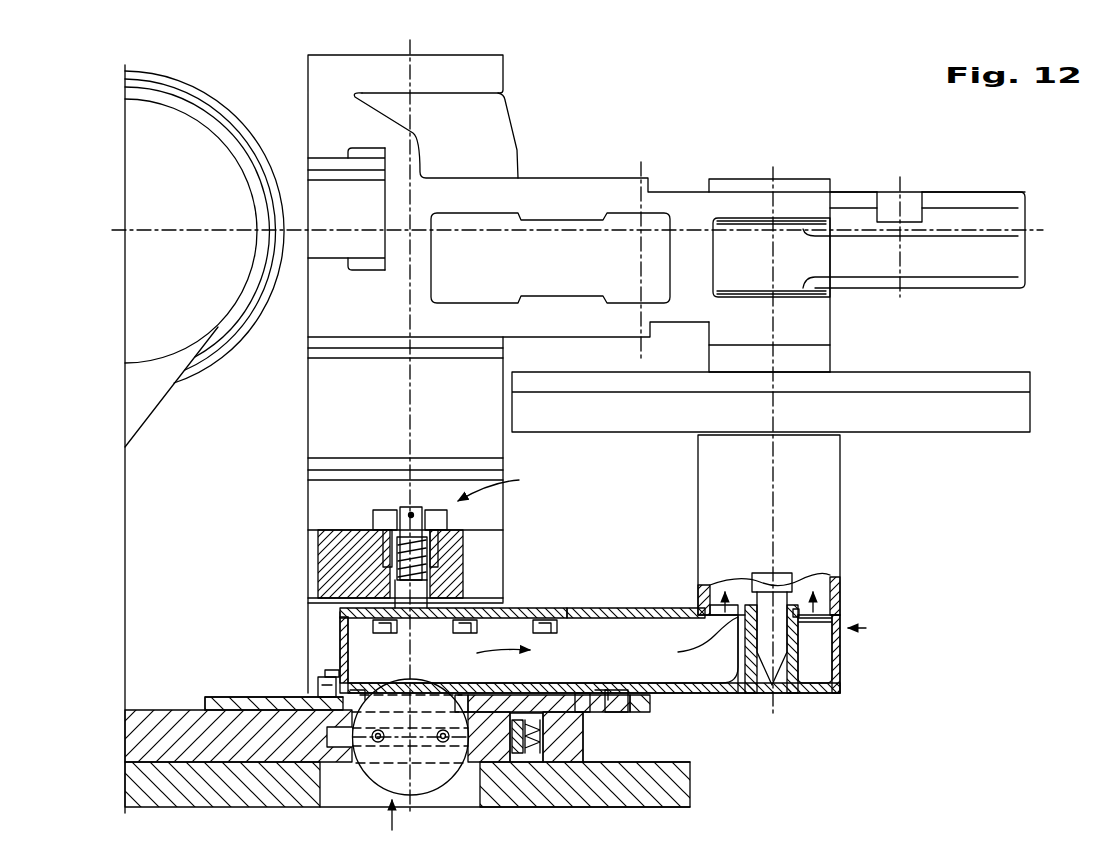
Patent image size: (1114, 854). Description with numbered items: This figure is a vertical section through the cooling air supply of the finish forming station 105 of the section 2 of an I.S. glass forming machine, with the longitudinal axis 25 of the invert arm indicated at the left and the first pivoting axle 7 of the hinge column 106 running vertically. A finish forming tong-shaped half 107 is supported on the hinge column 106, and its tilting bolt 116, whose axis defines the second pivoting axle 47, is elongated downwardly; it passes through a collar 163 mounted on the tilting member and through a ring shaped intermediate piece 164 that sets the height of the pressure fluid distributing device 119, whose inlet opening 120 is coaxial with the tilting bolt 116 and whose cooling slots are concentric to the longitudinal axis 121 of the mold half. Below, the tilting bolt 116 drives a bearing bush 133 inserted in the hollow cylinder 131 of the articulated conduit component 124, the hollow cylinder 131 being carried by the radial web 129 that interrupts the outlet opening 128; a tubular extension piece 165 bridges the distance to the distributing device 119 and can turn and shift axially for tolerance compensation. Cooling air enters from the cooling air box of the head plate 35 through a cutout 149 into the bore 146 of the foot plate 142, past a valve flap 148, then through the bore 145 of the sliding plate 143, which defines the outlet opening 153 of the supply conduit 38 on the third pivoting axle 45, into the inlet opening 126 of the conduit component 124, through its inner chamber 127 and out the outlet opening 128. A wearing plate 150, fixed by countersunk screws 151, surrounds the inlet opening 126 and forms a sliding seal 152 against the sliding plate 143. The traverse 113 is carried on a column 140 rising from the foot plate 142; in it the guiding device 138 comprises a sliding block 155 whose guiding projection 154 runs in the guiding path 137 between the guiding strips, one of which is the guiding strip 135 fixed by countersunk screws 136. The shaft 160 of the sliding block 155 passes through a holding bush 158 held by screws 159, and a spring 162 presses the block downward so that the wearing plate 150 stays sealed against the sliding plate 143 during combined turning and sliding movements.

The section 2 is at (118, 723).
The first pivoting axle 7 is at (410, 397).
The longitudinal axis of the invert arm 25 is at (123, 235).
The head plate 35 is at (645, 753).
The supply conduit 38 is at (354, 786).
The third pivoting axle 45 is at (412, 670).
The second pivoting axle 47 is at (776, 707).
The finish forming station 105 is at (118, 753).
The hinge column 106 is at (308, 500).
The finish forming tong-shaped half 107 is at (500, 177).
The traverse 113 is at (318, 540).
The tilting bolt 116 is at (762, 578).
The pressure fluid distributing device 119 is at (1031, 380).
The inlet opening 120 is at (828, 441).
The longitudinal axis of the finish forming mold half 121 is at (645, 176).
The articulated conduit component 124 is at (877, 628).
The inlet opening 126 is at (357, 695).
The inner chamber 127 is at (647, 632).
The outlet opening 128 is at (800, 611).
The radial web 129 is at (838, 653).
The hollow cylinder 131 is at (800, 667).
The bearing bush 133 is at (793, 578).
The guiding strip 135 is at (520, 607).
The countersunk screw 136 is at (557, 630).
The guiding path 137 is at (568, 609).
The guiding device 138 is at (507, 483).
The column 140 is at (308, 629).
The foot plate 142 is at (543, 794).
The sliding plate 143 is at (216, 697).
The bore 145 is at (513, 695).
The bore 146 is at (460, 772).
The valve flap 148 is at (428, 794).
The cutout 149 is at (482, 803).
The wearing plate 150 is at (318, 692).
The countersunk screw 151 is at (322, 672).
The sliding seal 152 is at (610, 713).
The outlet opening 153 is at (457, 695).
The guiding projection 154 is at (418, 611).
The sliding block 155 is at (432, 578).
The holding bush 158 is at (450, 524).
The screw 159 is at (375, 509).
The shaft 160 is at (423, 507).
The spring 162 is at (434, 558).
The collar 163 is at (832, 330).
The intermediate piece 164 is at (832, 357).
The extension piece 165 is at (842, 491).